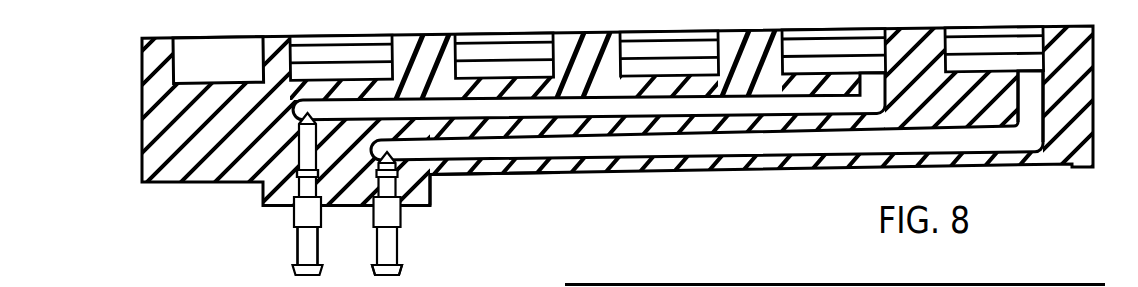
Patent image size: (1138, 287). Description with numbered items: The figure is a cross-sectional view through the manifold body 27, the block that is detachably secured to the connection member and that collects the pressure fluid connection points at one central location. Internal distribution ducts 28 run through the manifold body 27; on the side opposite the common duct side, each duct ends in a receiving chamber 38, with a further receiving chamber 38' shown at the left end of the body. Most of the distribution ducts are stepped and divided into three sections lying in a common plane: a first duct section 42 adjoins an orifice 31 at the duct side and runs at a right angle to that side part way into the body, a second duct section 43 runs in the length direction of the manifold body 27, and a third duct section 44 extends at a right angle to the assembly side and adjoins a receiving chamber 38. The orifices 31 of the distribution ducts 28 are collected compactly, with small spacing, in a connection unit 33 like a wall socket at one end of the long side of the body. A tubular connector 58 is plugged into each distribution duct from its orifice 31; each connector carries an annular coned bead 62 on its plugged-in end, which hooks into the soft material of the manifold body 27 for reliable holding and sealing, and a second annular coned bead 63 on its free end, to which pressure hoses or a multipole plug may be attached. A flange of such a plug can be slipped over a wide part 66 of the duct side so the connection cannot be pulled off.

The manifold body 27 is at (157, 147).
The receiving chamber 38' is at (218, 44).
The receiving chamber 38 is at (667, 40).
The distribution duct 28 is at (528, 107).
The second duct section 43 is at (703, 115).
The third duct section 44 is at (1043, 88).
The first duct section 42 is at (429, 200).
The connection unit 33 is at (424, 198).
The wide part 66 is at (495, 210).
The orifice 31 is at (320, 208).
The annular coned bead 62 is at (294, 172).
The tubular connector 58 is at (294, 240).
The annular coned bead 63 is at (398, 266).